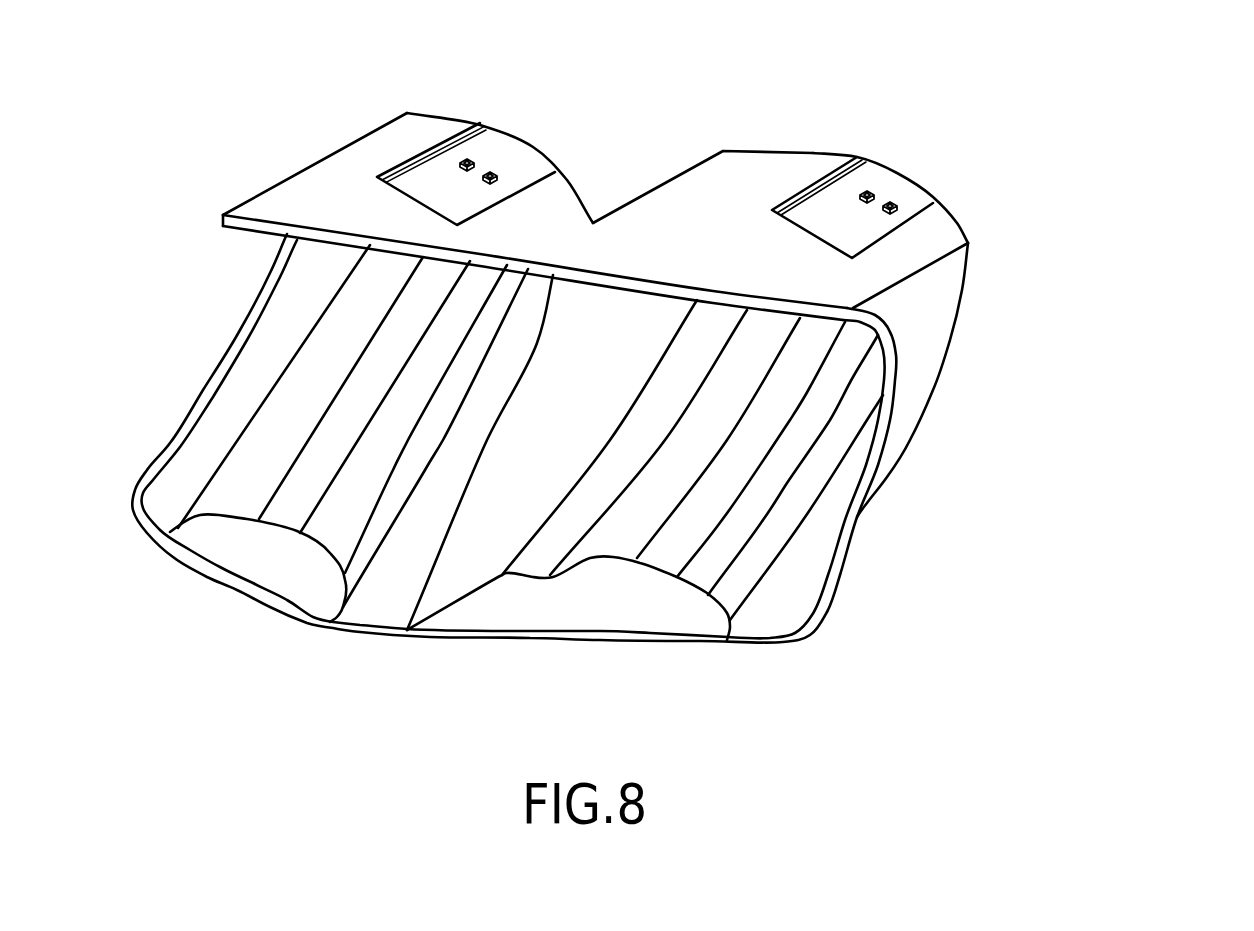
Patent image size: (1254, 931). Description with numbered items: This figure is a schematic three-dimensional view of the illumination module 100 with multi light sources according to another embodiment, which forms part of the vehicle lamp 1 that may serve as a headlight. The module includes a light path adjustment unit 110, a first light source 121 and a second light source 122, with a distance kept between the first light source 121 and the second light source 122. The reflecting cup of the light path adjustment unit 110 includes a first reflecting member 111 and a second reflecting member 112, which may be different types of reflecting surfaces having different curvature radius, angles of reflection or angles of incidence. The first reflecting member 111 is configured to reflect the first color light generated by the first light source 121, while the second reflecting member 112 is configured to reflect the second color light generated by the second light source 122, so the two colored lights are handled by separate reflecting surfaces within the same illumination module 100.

The vehicle lamp 1 is at (1102, 253).
The illumination module 100 is at (252, 577).
The light path adjustment unit 110 is at (561, 438).
The first reflecting member 111 is at (767, 457).
The second reflecting member 112 is at (792, 519).
The first light source 121 is at (493, 173).
The second light source 122 is at (465, 158).